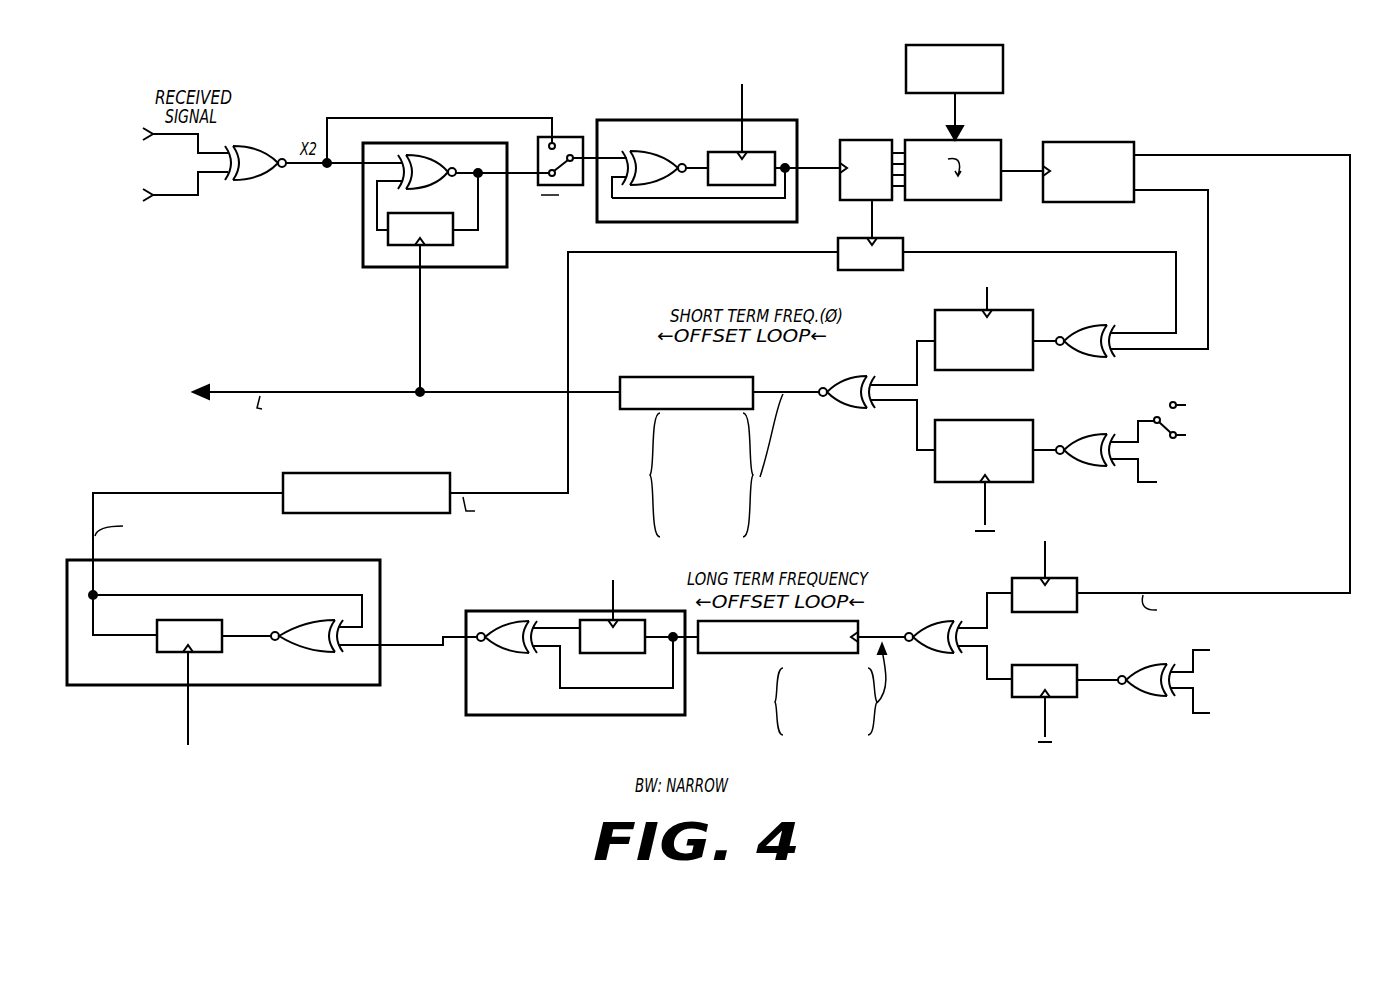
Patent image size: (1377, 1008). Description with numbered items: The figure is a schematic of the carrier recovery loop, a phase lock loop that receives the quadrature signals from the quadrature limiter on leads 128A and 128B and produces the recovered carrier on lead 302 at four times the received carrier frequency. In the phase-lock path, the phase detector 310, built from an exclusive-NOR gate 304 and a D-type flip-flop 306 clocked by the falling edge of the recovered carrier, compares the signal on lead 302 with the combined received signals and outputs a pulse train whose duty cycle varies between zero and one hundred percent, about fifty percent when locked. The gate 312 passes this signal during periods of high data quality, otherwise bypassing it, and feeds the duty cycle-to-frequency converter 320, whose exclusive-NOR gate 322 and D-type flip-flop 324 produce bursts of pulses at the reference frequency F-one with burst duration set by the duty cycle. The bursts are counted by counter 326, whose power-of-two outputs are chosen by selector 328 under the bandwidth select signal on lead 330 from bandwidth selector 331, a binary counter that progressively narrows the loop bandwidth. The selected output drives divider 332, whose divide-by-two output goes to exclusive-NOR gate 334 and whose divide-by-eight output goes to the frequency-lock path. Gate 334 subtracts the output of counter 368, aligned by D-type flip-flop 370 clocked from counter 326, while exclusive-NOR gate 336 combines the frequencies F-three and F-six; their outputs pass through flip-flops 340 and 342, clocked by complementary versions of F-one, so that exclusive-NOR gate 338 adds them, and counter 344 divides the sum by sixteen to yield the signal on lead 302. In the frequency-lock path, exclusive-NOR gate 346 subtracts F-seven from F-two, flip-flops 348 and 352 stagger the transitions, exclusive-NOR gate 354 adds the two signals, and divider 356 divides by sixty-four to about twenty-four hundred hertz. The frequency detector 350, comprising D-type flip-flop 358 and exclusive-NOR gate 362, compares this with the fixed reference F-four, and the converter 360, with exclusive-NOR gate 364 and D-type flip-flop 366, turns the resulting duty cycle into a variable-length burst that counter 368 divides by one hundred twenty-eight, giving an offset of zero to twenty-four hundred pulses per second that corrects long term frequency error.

The lead 128A is at (182, 136).
The lead 128B is at (182, 199).
The lead 302 is at (320, 391).
The exclusive-NOR gate 304 is at (463, 192).
The D-type flip-flop 306 is at (438, 248).
The phase detector 310 is at (363, 223).
The gate 312 is at (568, 137).
The duty cycle-to-frequency converter 320 is at (637, 217).
The exclusive-NOR gate 322 is at (660, 161).
The D-type flip-flop 324 is at (726, 161).
The counter 326 is at (858, 200).
The selector 328 is at (962, 202).
The lead 330 is at (1000, 73).
The bandwidth selector 331 is at (957, 112).
The divider 332 is at (1123, 142).
The exclusive-NOR gate 334 is at (1088, 322).
The exclusive-NOR gate 336 is at (1103, 433).
The exclusive-NOR gate 338 is at (863, 378).
The flip-flop 340 is at (1008, 310).
The flip-flop 342 is at (985, 420).
The counter 344 is at (707, 377).
The exclusive-NOR gate 346 is at (1142, 700).
The flip-flop 348 is at (1060, 577).
The frequency detector 350 is at (537, 715).
The flip-flop 352 is at (1047, 665).
The exclusive-NOR gate 354 is at (940, 622).
The divider 356 is at (752, 653).
The D-type flip-flop 358 is at (623, 653).
The converter 360 is at (308, 687).
The exclusive-NOR gate 362 is at (517, 653).
The exclusive-NOR gate 364 is at (295, 620).
The D-type flip-flop 366 is at (172, 620).
The counter 368 is at (365, 472).
The D-type flip-flop 370 is at (893, 241).